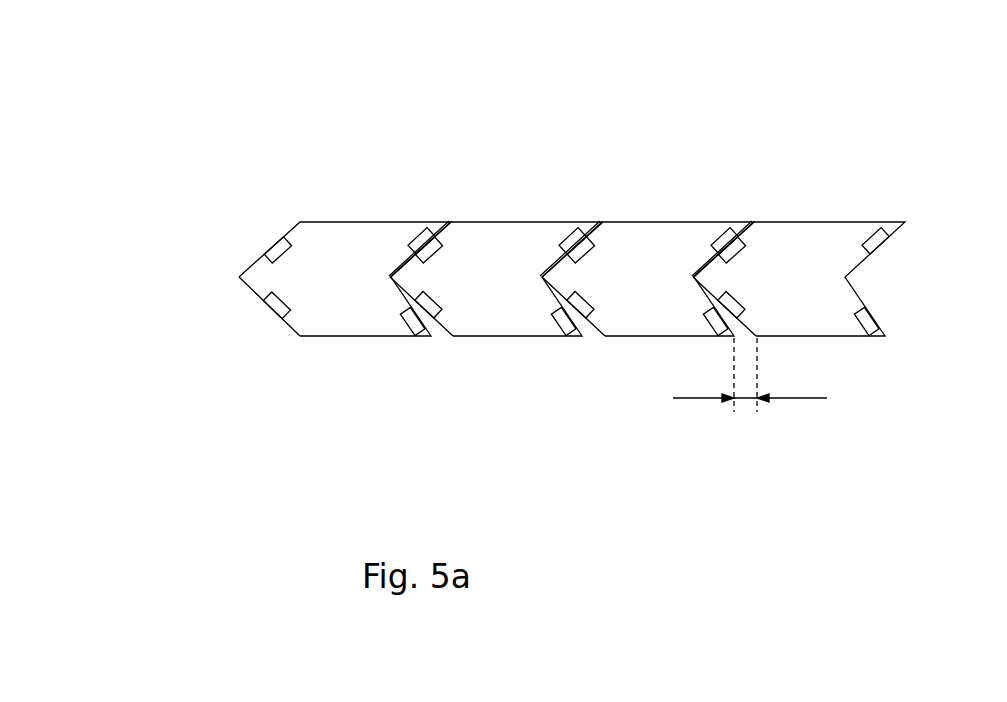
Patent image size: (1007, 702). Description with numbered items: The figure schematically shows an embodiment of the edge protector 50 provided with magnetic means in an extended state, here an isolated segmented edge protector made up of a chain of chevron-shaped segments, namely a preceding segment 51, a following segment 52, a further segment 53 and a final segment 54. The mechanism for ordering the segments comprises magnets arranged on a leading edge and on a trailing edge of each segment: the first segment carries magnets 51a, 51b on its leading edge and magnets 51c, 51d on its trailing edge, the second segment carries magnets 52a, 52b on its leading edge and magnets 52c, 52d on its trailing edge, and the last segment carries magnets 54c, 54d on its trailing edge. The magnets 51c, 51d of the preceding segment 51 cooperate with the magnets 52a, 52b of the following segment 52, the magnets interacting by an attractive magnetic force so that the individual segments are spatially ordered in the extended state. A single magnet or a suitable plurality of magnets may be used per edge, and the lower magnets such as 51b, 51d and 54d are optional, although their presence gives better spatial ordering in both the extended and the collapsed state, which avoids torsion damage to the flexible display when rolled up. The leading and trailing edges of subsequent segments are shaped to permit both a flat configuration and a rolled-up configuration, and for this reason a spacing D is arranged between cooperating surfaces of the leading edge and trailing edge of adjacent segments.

The edge protector 50 is at (272, 57).
The preceding segment 51 is at (366, 278).
The magnet 51a is at (272, 244).
The magnet 51b is at (275, 317).
The magnet 51c is at (423, 230).
The magnet 51d is at (415, 333).
The following segment 52 is at (525, 273).
The magnet 52a is at (438, 257).
The magnet 52b is at (437, 304).
The magnet 52c is at (580, 232).
The magnet 52d is at (568, 333).
The segment 53 is at (674, 221).
The segment 54 is at (837, 253).
The magnet 54c is at (893, 232).
The magnet 54d is at (885, 326).